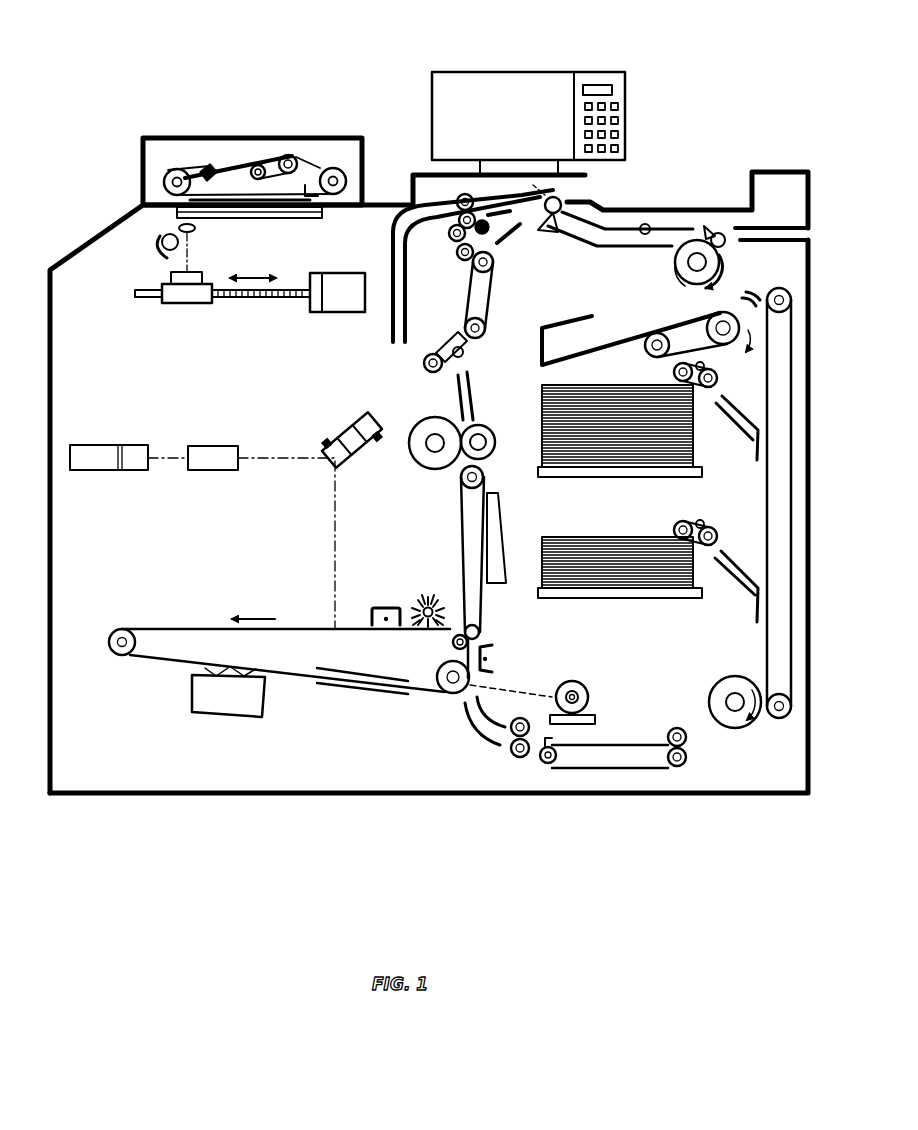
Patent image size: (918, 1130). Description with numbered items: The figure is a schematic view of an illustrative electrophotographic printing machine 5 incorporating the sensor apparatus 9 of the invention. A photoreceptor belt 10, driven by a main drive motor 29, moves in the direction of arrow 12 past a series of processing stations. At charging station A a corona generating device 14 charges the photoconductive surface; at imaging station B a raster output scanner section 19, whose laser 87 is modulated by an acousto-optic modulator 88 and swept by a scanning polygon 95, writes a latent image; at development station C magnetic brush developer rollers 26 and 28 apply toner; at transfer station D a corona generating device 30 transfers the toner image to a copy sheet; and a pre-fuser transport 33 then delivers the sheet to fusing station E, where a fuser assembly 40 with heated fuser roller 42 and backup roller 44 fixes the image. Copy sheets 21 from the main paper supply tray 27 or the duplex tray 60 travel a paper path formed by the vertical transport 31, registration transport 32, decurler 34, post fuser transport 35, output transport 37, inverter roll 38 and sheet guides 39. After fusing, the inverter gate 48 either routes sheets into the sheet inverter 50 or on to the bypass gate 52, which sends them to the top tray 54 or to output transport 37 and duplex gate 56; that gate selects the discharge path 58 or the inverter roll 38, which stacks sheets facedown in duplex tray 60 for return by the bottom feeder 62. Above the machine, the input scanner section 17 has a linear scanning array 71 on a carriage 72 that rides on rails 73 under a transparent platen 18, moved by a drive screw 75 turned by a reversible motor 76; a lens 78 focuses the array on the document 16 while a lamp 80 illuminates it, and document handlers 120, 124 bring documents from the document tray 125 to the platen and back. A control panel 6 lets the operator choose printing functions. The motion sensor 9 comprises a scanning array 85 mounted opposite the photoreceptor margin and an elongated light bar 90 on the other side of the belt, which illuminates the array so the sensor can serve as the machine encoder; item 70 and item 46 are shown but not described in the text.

The electrophotographic printing machine 5 is at (343, 75).
The control panel 6 is at (512, 72).
The sensor apparatus 9 is at (350, 695).
The photoreceptor belt 10 is at (200, 627).
The arrow 12 is at (240, 626).
The corona generating device 14 is at (388, 606).
The document 16 is at (228, 198).
The input scanner section 17 is at (292, 92).
The transparent platen 18 is at (300, 215).
The raster output scanner section 19 is at (200, 487).
The copy sheets 21 is at (545, 438).
The magnetic brush developer roller 26 is at (197, 672).
The main paper supply tray 27 is at (575, 478).
The magnetic brush developer roller 28 is at (247, 673).
The main drive motor 29 is at (590, 694).
The corona generating device 30 is at (495, 660).
The vertical transport 31 is at (757, 525).
The registration transport 32 is at (628, 745).
The pre-fuser transport 33 is at (487, 540).
The decurler 34 is at (428, 350).
The post fuser transport 35 is at (495, 298).
The output transport 37 is at (645, 236).
The inverter roll 38 is at (680, 282).
The sheet guides 39 is at (477, 730).
The fuser assembly 40 is at (438, 482).
The heated fuser roller 42 is at (437, 417).
The backup roller 44 is at (488, 425).
The pinch rollers 46 is at (533, 757).
The inverter gate 48 is at (498, 232).
The sheet inverter 50 is at (410, 272).
The bypass gate 52 is at (560, 228).
The top tray 54 is at (640, 208).
The duplex gate 56 is at (722, 236).
The discharge path 58 is at (797, 242).
The duplex tray 60 is at (578, 345).
The bottom feeder 62 is at (710, 350).
The document handler 70 is at (107, 228).
The linear scanning array 71 is at (193, 278).
The carriage 72 is at (183, 295).
The rails 73 is at (245, 298).
The drive screw 75 is at (280, 298).
The reversible motor 76 is at (355, 278).
The lens 78 is at (195, 232).
The lamp 80 is at (160, 252).
The scanning array of sensor 85 is at (368, 693).
The laser 87 is at (90, 445).
The acousto-optic modulator 88 is at (212, 446).
The light bar 90 is at (348, 668).
The scanning polygon 95 is at (320, 418).
The document handler 120 is at (345, 178).
The document handler 124 is at (168, 182).
The document tray 125 is at (205, 165).
The charging station A is at (372, 583).
The imaging station B is at (320, 598).
The development station C is at (228, 733).
The transfer station D is at (525, 668).
The fusing station E is at (490, 400).